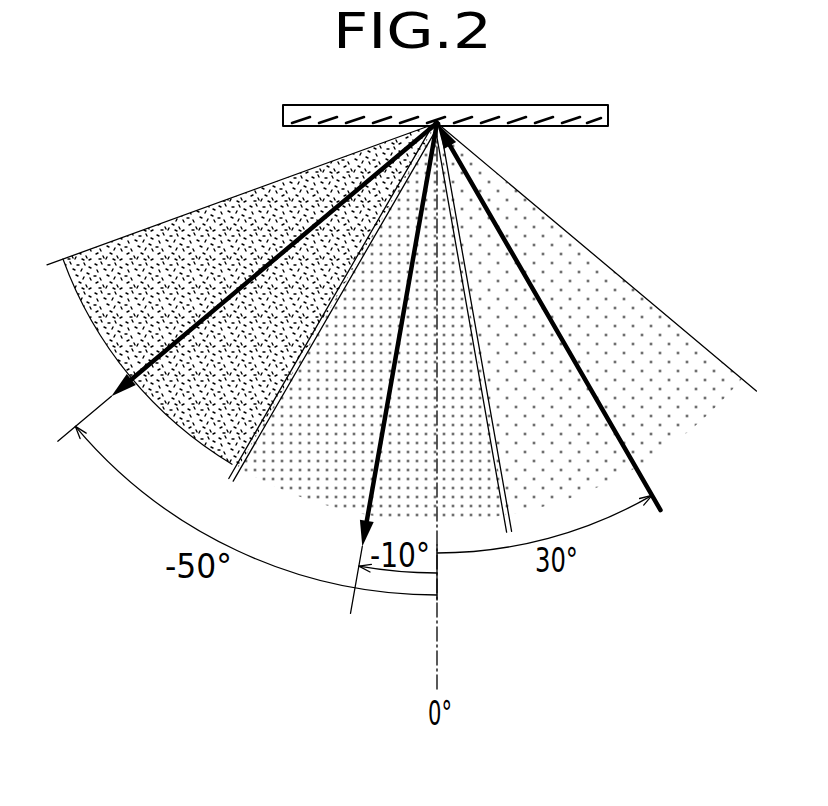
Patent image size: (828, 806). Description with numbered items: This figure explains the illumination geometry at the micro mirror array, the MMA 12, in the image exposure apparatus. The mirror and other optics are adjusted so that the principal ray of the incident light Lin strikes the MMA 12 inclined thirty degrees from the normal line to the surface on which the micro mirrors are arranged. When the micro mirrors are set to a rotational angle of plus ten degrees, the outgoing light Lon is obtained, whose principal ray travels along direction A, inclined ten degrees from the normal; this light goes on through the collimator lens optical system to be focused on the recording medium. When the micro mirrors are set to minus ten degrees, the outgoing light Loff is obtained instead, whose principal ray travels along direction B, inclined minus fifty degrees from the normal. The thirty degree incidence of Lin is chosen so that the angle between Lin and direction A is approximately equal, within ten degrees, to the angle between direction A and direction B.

The MMA 12 is at (608, 112).
The outgoing light Lon is at (360, 518).
The outgoing light Loff is at (136, 388).
The incident light Lin is at (643, 470).
The direction A is at (350, 603).
The direction B is at (74, 429).